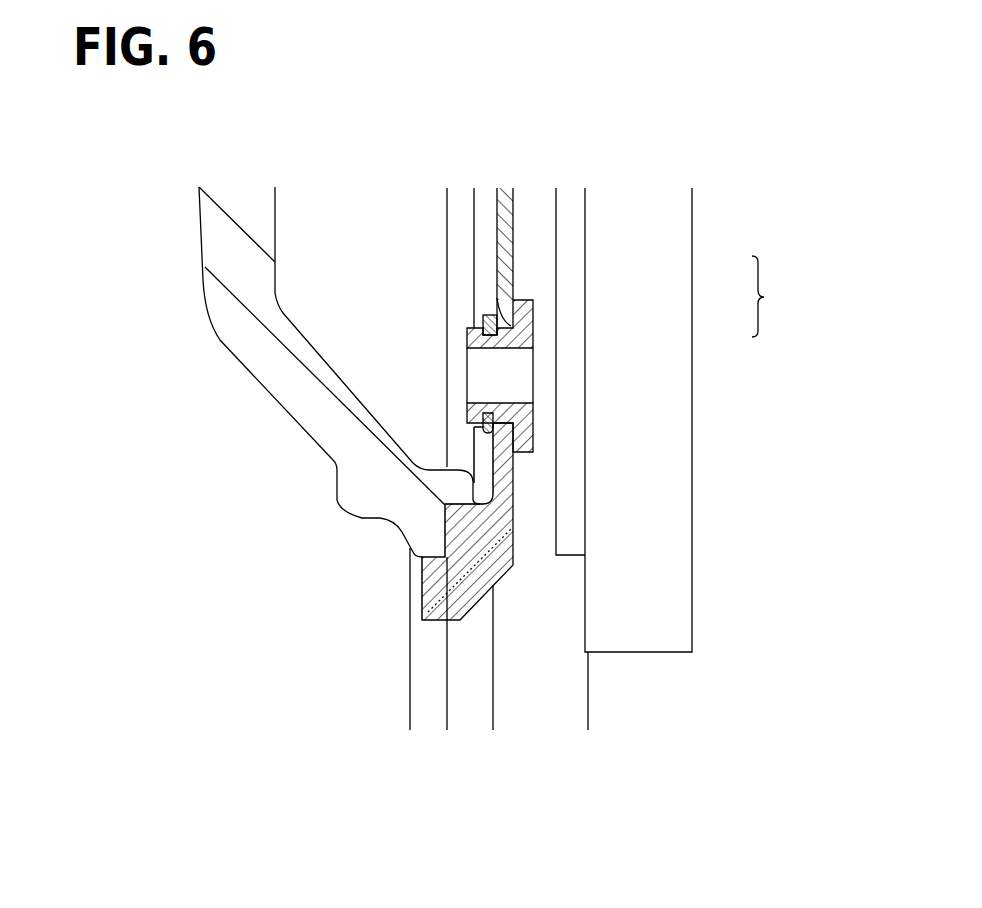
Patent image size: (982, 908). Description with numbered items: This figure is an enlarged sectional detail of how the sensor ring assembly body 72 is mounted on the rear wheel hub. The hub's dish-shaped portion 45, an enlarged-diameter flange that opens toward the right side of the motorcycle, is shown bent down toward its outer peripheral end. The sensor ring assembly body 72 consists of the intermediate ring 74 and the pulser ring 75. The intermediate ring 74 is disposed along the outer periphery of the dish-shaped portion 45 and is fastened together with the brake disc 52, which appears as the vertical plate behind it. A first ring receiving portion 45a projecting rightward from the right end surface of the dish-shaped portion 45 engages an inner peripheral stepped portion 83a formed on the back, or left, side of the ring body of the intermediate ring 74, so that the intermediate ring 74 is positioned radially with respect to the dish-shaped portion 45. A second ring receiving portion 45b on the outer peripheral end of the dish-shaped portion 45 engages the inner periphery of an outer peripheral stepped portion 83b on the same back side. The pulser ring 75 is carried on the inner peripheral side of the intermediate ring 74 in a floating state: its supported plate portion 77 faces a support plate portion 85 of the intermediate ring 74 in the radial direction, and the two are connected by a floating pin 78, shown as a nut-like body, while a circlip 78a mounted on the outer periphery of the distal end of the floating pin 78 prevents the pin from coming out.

The dish-shaped portion 45 is at (247, 358).
The first ring receiving portion 45a is at (440, 550).
The second ring receiving portion 45b is at (458, 498).
The brake disc 52 is at (496, 704).
The sensor ring assembly body 72 is at (772, 296).
The intermediate ring 74 is at (520, 489).
The pulser ring 75 is at (518, 222).
The supported plate portion 77 is at (512, 327).
The floating pin 78 is at (476, 367).
The circlip 78a is at (482, 322).
The inner peripheral stepped portion 83a is at (445, 513).
The outer peripheral stepped portion 83b is at (432, 562).
The support plate portion 85 is at (500, 432).